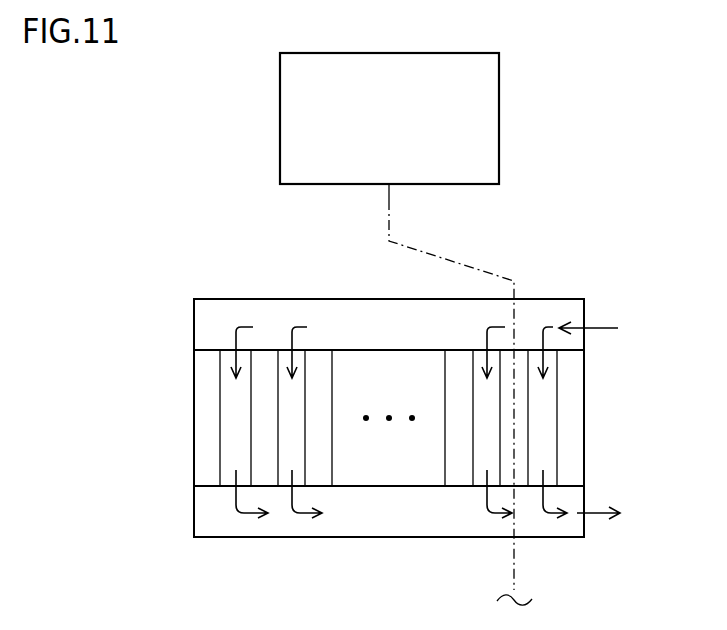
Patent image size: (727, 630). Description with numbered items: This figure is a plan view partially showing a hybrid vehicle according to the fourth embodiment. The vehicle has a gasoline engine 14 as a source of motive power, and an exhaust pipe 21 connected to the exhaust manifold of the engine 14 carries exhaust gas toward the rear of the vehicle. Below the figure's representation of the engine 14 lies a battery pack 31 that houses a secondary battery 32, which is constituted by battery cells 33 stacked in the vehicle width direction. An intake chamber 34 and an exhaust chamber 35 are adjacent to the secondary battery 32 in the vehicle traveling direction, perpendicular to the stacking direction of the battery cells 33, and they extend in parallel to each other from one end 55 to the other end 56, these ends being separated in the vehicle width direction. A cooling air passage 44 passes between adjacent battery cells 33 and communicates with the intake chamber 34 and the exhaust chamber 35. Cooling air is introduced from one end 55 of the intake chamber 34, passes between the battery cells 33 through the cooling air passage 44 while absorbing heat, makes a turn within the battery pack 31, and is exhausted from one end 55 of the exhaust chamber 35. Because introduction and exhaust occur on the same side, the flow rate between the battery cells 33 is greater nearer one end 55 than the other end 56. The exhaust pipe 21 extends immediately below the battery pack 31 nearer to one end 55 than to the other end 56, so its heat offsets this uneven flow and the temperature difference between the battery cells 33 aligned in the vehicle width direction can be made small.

The engine 14 is at (499, 118).
The exhaust pipe 21 is at (458, 259).
The battery pack 31 is at (602, 291).
The secondary battery 32 is at (194, 418).
The battery cells 33 is at (530, 440).
The intake chamber 34 is at (243, 312).
The exhaust chamber 35 is at (243, 528).
The cooling air passage 44 is at (543, 404).
The one end 55 is at (585, 314).
The other end 56 is at (194, 325).